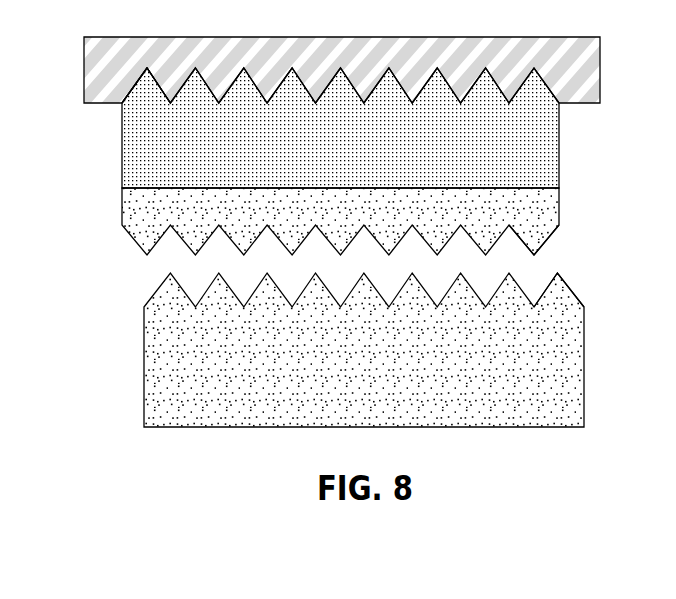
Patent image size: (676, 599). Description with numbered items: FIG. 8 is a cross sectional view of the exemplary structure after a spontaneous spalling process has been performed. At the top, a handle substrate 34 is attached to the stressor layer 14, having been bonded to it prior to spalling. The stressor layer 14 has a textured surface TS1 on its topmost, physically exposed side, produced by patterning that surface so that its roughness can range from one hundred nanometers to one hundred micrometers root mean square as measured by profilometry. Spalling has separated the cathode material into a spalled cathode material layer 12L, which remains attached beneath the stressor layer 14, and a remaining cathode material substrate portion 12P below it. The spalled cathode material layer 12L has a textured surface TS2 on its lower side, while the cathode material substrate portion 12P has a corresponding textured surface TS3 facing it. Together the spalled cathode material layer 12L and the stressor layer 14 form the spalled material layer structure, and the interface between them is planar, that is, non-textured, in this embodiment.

The handle substrate 34 is at (585, 77).
The stressor layer 14 is at (353, 157).
The spalled cathode material layer 12L is at (133, 210).
The cathode material substrate portion 12P is at (393, 377).
The textured surface TS1 is at (137, 83).
The textured surface TS2 is at (549, 237).
The textured surface TS3 is at (571, 290).